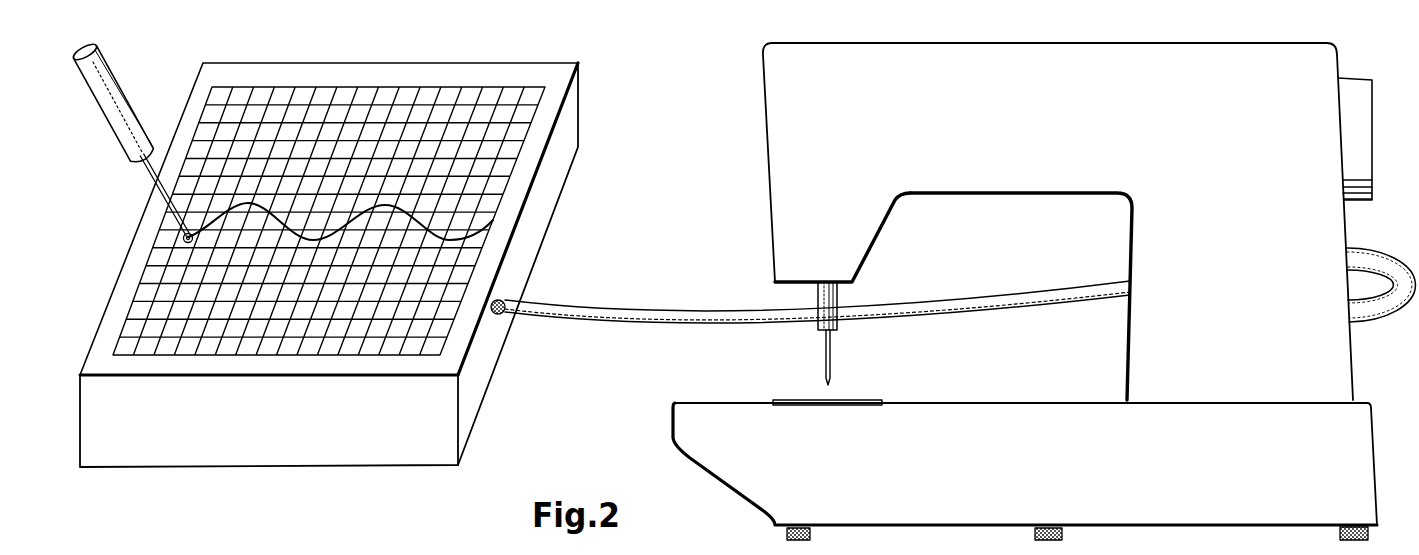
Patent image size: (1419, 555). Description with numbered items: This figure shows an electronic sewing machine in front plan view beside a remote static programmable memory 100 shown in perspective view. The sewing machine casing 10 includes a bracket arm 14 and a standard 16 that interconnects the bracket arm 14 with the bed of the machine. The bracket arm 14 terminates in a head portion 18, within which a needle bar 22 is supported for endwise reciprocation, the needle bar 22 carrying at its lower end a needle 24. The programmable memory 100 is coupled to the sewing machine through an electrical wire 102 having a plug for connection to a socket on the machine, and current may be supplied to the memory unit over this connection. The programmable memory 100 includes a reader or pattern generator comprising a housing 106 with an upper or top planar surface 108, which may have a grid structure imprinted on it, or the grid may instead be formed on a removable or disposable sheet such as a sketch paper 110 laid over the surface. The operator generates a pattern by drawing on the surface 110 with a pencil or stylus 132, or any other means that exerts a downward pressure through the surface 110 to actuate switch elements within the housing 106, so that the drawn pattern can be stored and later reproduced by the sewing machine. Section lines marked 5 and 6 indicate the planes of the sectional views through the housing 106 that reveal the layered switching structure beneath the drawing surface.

The sewing machine casing 10 is at (1044, 289).
The bracket arm 14 is at (1323, 68).
The standard 16 is at (1333, 233).
The head portion 18 is at (775, 193).
The needle bar 22 is at (818, 327).
The needle 24 is at (825, 365).
The programmable memory 100 is at (346, 265).
The electrical wire 102 is at (678, 313).
The housing 106 is at (528, 242).
The upper planar surface 108 is at (522, 187).
The sketch paper 110 is at (517, 132).
The stylus 132 is at (108, 84).
The section line 5- 5 is at (113, 275).
The section line 6- 6 is at (403, 40).